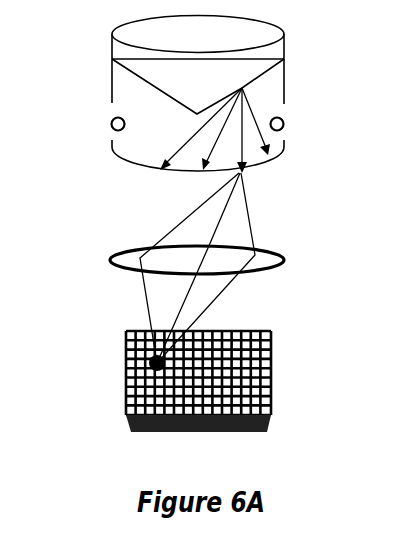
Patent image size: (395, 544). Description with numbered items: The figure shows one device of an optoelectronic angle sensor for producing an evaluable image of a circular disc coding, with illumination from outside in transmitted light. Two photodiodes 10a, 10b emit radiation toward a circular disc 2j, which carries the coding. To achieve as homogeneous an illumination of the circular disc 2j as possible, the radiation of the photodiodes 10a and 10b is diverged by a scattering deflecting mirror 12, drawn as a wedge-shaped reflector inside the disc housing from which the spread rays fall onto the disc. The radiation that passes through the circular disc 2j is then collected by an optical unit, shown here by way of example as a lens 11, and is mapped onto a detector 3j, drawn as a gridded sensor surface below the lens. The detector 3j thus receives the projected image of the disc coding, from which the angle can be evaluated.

The circular disc 2j is at (127, 160).
The scattering deflecting mirror 12 is at (137, 76).
The photodiode 10a is at (112, 124).
The photodiode 10b is at (285, 122).
The lens 11 is at (283, 257).
The detector 3j is at (271, 364).